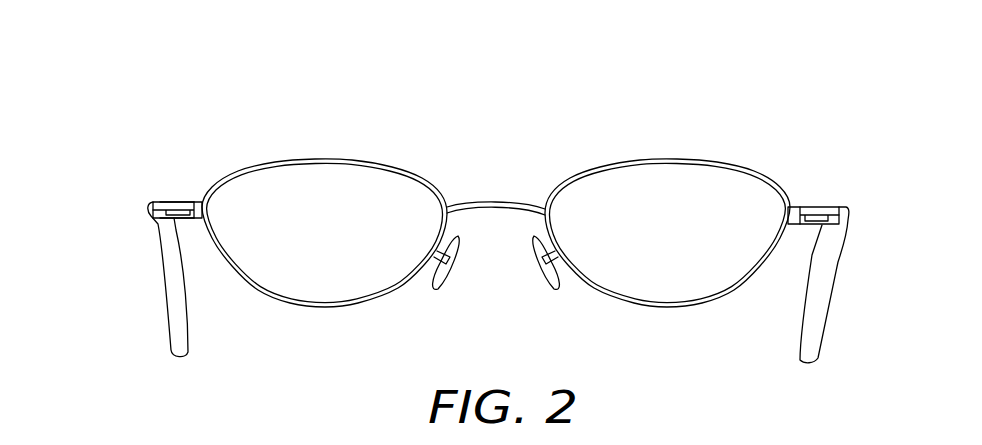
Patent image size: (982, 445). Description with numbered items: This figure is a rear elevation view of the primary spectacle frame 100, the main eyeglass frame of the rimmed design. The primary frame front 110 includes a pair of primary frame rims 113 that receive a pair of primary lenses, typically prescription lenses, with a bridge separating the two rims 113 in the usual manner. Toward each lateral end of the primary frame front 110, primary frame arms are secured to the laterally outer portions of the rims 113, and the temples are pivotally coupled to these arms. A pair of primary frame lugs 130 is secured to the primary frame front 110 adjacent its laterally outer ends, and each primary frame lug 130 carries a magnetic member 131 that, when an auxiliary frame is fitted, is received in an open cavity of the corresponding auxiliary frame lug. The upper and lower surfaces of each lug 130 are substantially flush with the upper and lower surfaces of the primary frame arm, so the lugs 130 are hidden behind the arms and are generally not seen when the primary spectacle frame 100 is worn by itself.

The primary spectacle frame 100 is at (707, 145).
The primary frame front 110 is at (496, 199).
The primary frame rims 113 is at (320, 159).
The primary frame lugs 130 is at (188, 229).
The magnetic member 131 is at (185, 202).